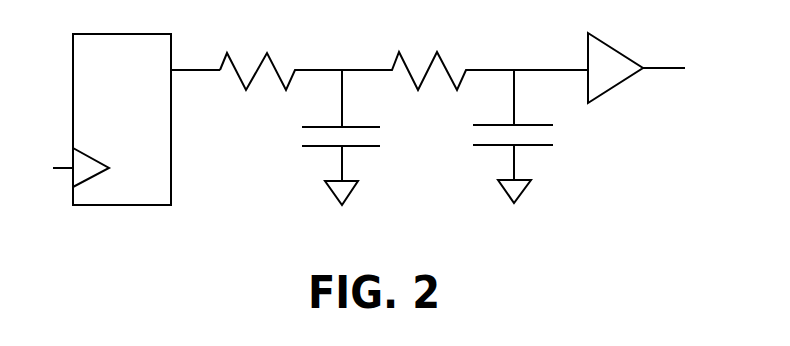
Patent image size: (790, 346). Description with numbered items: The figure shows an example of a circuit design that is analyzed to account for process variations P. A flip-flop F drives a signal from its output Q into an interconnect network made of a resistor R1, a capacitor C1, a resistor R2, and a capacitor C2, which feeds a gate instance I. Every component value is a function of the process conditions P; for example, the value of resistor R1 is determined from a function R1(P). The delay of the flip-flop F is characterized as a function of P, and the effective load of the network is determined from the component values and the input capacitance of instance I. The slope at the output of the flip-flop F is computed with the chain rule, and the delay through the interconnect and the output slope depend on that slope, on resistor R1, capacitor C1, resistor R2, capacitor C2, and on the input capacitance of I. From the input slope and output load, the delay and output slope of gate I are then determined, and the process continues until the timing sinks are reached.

The flip-flop F is at (112, 119).
The output pin of the flip-flop Q is at (184, 64).
The resistor R1 is at (281, 49).
The capacitor C1 is at (310, 137).
The resistor R2 is at (428, 48).
The capacitor C2 is at (490, 136).
The instance I is at (599, 68).